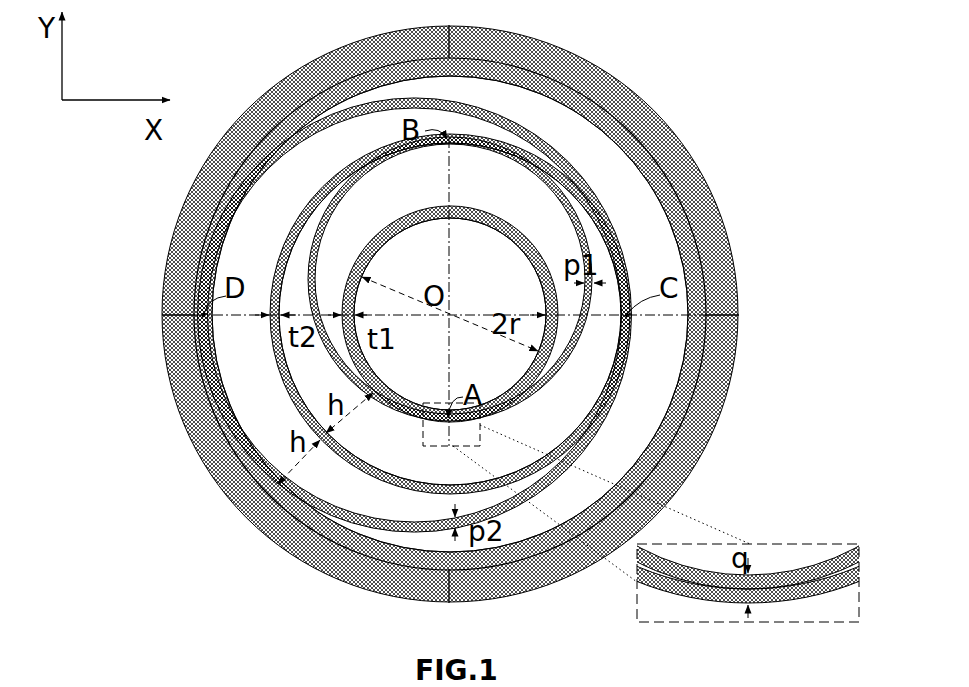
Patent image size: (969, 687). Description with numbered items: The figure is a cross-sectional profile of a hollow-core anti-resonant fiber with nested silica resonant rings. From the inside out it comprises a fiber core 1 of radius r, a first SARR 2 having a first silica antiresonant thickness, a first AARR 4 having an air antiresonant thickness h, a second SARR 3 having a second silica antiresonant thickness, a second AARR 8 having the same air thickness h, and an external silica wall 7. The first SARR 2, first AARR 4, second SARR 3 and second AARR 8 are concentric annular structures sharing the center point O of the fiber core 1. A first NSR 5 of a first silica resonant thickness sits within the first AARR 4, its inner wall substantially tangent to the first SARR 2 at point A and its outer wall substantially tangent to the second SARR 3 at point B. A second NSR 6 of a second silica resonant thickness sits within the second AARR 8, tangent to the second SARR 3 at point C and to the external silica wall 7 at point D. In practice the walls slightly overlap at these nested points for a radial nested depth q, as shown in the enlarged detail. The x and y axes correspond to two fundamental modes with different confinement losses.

The fiber core 1 is at (431, 256).
The first SARR 2 is at (487, 221).
The second SARR 3 is at (274, 283).
The first AARR 4 is at (406, 458).
The first NSR 5 is at (323, 224).
The second NSR 6 is at (462, 108).
The external silica wall 7 is at (683, 227).
The second AARR 8 is at (378, 500).